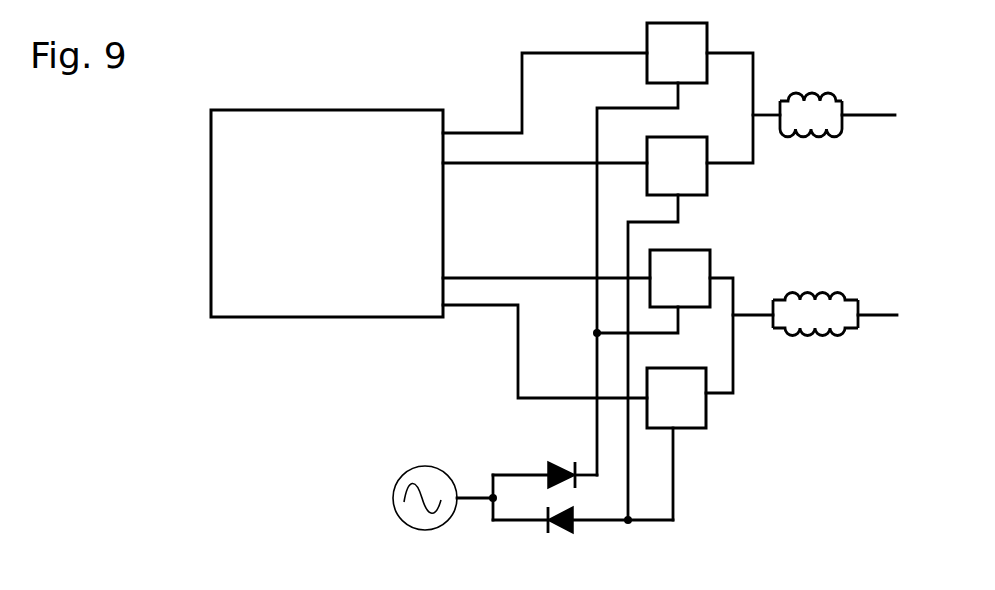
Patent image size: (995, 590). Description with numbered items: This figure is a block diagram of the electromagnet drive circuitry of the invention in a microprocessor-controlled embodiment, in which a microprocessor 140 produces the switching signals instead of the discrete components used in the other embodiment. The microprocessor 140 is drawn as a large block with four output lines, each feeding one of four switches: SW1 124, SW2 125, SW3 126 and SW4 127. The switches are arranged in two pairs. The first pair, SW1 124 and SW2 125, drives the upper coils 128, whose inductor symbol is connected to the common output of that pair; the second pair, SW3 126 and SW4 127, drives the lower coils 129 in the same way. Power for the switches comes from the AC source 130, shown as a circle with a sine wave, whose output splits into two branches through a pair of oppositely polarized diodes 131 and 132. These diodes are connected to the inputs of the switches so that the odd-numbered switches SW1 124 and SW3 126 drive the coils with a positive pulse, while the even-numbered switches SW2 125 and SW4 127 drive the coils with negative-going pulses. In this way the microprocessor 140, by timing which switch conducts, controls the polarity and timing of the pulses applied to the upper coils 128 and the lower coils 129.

The switch SW1 124 is at (708, 35).
The switch SW2 125 is at (708, 183).
The switch SW3 126 is at (713, 267).
The switch SW4 127 is at (706, 413).
The upper coils 128 is at (837, 92).
The lower coils 129 is at (842, 293).
The AC source 130 is at (392, 497).
The diode 131 is at (551, 463).
The diode 132 is at (552, 537).
The microprocessor 140 is at (368, 108).